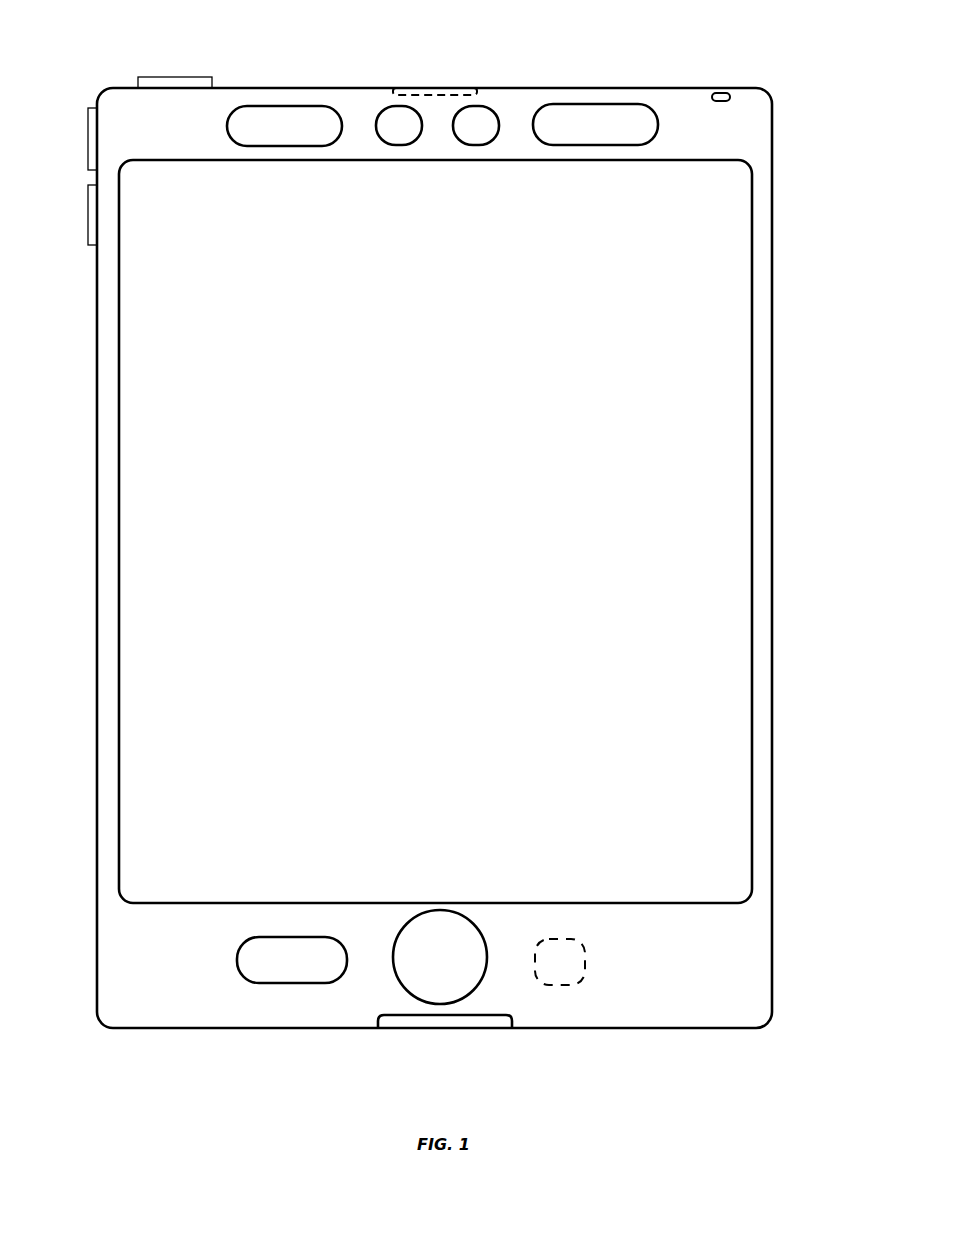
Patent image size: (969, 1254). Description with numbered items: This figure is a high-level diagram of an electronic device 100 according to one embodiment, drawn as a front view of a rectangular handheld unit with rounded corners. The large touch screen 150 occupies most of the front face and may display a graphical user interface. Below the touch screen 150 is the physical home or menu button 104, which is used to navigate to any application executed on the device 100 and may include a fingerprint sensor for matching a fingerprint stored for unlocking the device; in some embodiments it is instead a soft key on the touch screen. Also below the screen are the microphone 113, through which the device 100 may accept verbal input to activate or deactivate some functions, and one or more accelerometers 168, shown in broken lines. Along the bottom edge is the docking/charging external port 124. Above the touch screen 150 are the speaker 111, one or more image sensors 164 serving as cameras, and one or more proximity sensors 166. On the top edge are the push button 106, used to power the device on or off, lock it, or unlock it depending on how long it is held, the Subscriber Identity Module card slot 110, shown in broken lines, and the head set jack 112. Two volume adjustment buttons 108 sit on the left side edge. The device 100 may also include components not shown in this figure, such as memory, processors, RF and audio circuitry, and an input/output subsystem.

The electronic device 100 is at (806, 87).
The menu button 104 is at (440, 957).
The push button 106 is at (180, 77).
The volume adjustment buttons 108 is at (88, 137).
The Subscriber Identity Module (SIM) card slot 110 is at (415, 88).
The speaker 111 is at (284, 126).
The head set jack 112 is at (720, 93).
The microphone 113 is at (292, 960).
The docking/charging external port 124 is at (485, 1030).
The touch screen 150 is at (752, 435).
The image sensors 164 is at (437, 125).
The proximity sensors 166 is at (595, 124).
The accelerometers 168 is at (560, 962).